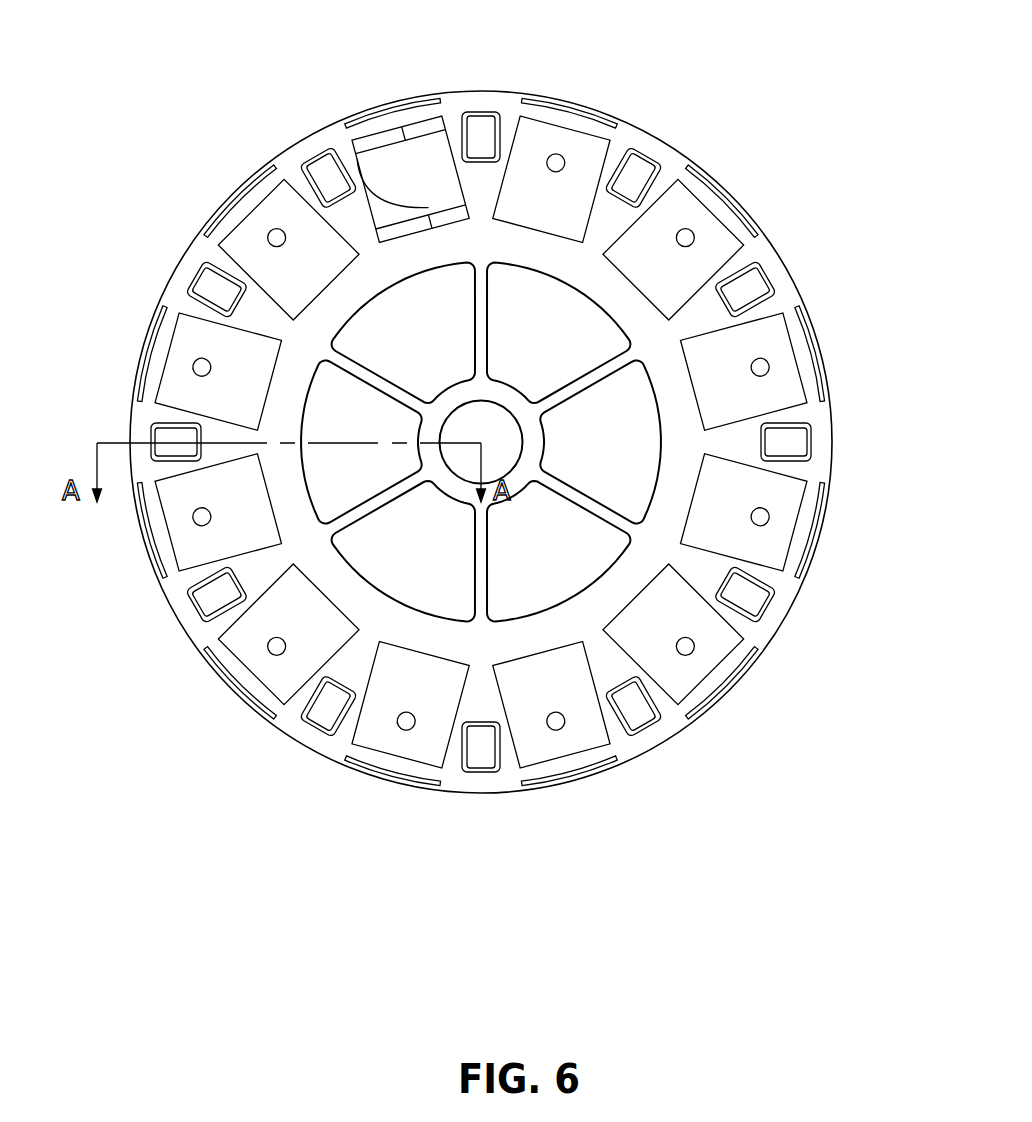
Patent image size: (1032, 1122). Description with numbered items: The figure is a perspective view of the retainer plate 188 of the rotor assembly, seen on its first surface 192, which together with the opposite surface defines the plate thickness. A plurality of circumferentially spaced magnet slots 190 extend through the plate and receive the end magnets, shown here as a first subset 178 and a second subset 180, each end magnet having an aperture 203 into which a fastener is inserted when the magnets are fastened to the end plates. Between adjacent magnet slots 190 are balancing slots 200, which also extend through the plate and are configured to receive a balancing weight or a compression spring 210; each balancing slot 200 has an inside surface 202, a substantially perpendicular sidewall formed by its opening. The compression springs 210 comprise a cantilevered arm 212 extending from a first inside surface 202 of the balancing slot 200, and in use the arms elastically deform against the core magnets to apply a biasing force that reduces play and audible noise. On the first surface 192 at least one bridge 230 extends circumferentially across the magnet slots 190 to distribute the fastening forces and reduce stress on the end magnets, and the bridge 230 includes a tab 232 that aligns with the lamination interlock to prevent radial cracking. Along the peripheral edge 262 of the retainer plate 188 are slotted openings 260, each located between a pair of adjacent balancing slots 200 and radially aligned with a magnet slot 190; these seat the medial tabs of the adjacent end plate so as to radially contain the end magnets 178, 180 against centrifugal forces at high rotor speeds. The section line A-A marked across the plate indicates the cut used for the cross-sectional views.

The first subset of end magnets 178 is at (698, 225).
The second subset of end magnets 180 is at (780, 365).
The retainer plate 188 is at (473, 401).
The magnet slots 190 is at (443, 130).
The first surface 192 is at (765, 577).
The balancing slots 200 is at (495, 118).
The inside surface 202 is at (760, 452).
The aperture 203 is at (563, 160).
The compression spring 210 is at (480, 133).
The cantilevered arm 212 is at (793, 460).
The bridge 230 is at (382, 236).
The tab 232 is at (357, 160).
The slotted openings 260 is at (143, 357).
The peripheral edge 262 is at (177, 270).